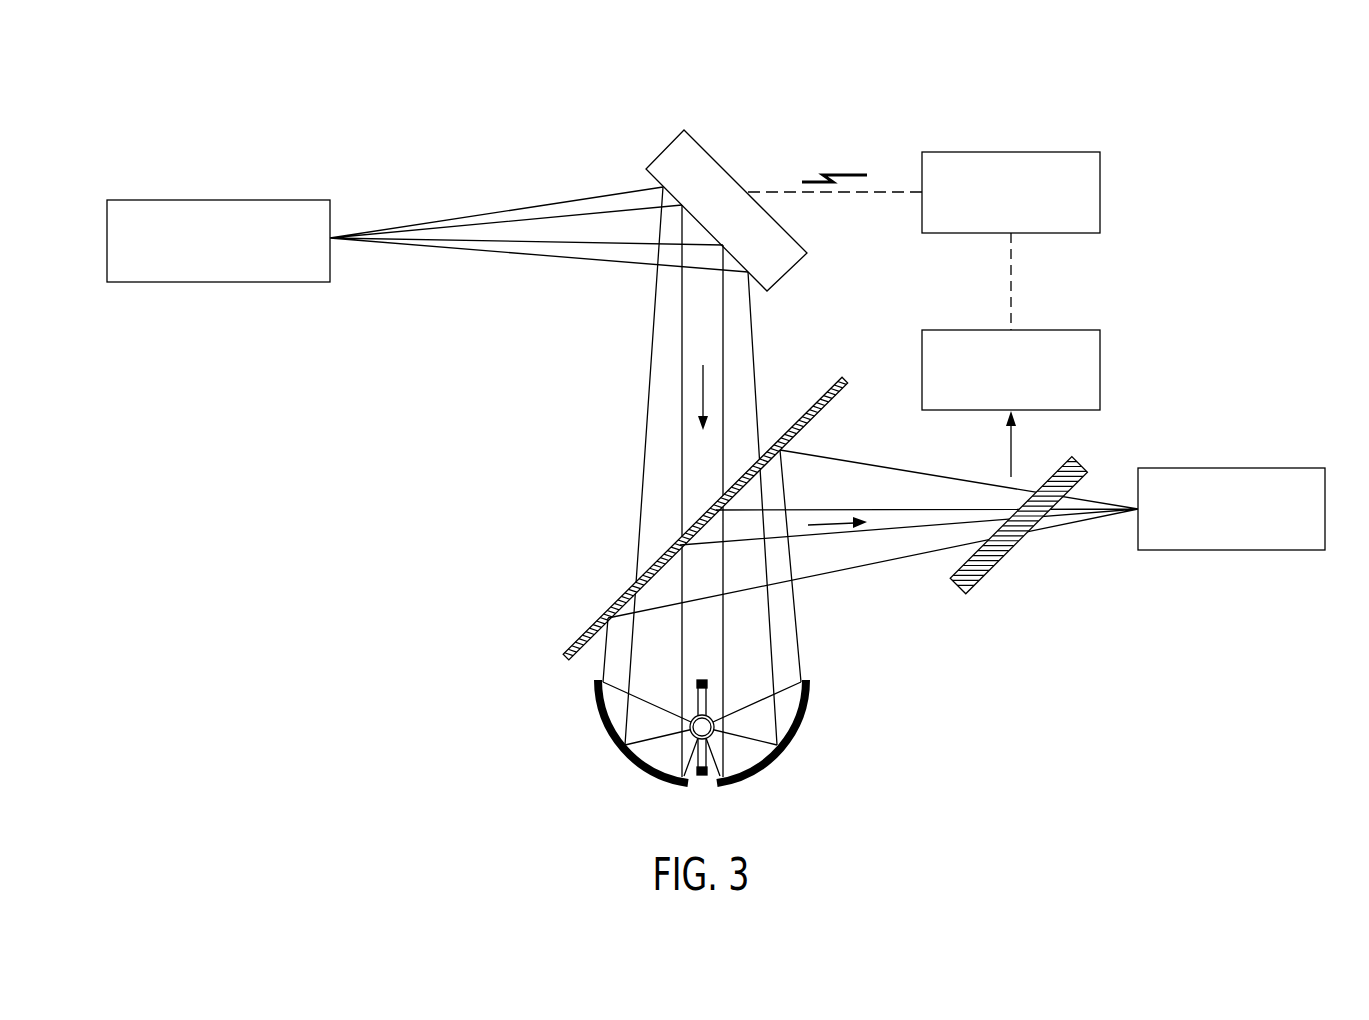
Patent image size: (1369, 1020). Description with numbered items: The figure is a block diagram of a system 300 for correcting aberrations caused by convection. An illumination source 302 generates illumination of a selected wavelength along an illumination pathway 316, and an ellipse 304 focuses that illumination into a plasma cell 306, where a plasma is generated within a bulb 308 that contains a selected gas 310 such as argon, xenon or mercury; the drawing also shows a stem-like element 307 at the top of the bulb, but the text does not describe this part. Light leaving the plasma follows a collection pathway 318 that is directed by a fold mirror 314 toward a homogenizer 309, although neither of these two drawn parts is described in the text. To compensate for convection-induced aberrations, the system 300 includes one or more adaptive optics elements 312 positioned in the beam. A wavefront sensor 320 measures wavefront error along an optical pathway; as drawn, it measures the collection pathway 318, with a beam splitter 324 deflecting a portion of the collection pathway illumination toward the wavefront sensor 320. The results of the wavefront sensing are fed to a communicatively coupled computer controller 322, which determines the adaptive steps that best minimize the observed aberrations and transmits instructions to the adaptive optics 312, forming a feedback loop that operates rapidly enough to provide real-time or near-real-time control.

The system 300 is at (193, 122).
The illumination source 302 is at (220, 282).
The ellipse 304 is at (780, 748).
The plasma cell 306 is at (723, 699).
The lamp electrode 307 is at (702, 680).
The bulb 308 is at (690, 727).
The homogenizer 309 is at (1255, 468).
The gas 310 is at (708, 722).
The adaptive optics elements 312 is at (777, 240).
The mirror 314 is at (846, 380).
The illumination pathway 316 is at (665, 386).
The collection pathway 318 is at (845, 546).
The wavefront sensor 320 is at (1100, 370).
The computer controller 322 is at (1100, 192).
The beam splitter 324 is at (990, 572).